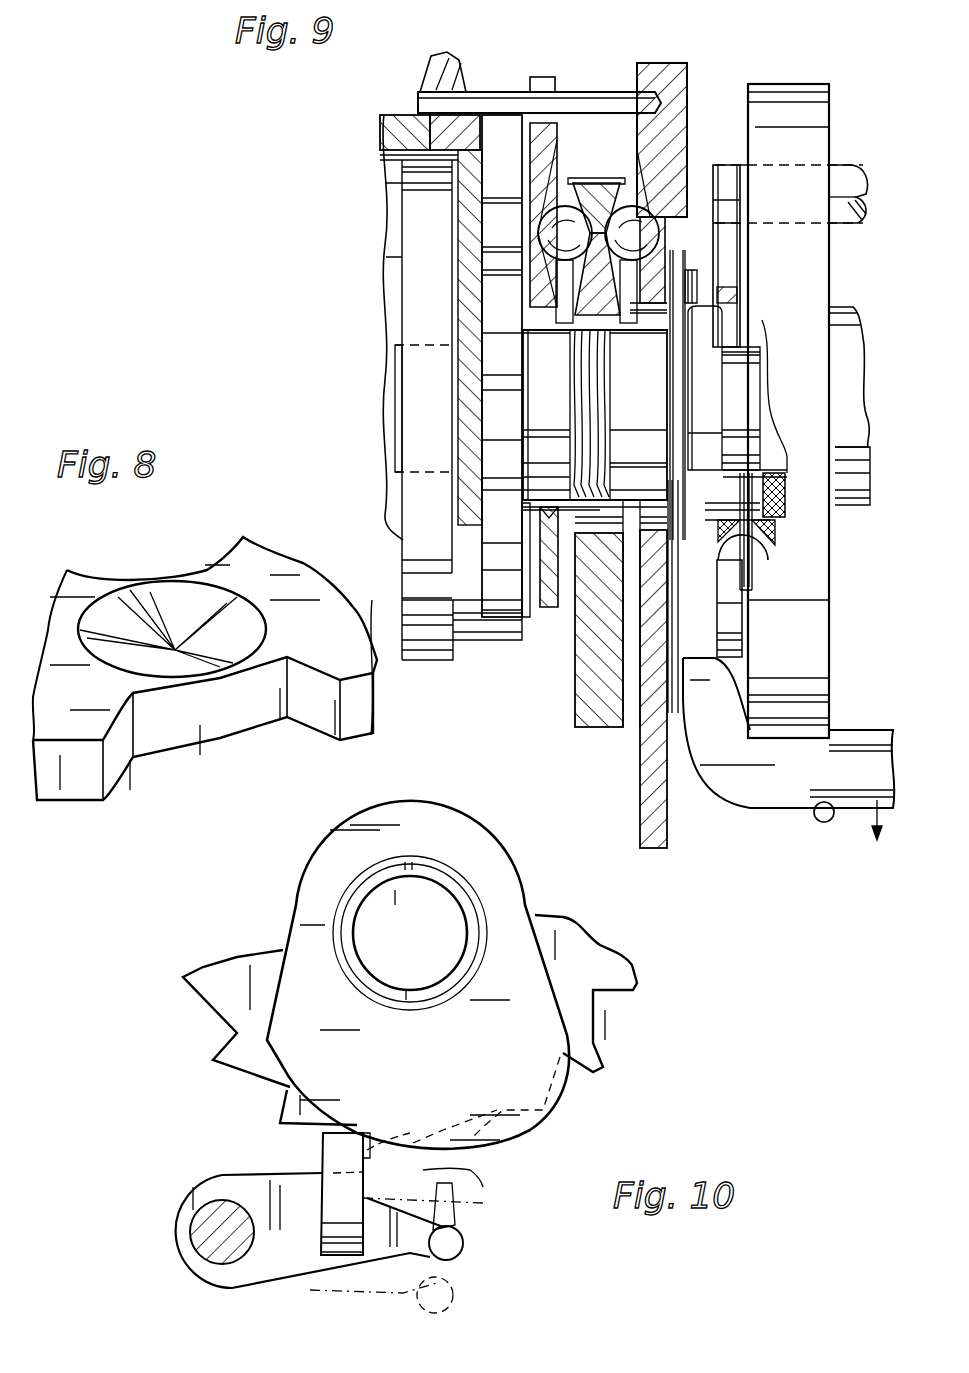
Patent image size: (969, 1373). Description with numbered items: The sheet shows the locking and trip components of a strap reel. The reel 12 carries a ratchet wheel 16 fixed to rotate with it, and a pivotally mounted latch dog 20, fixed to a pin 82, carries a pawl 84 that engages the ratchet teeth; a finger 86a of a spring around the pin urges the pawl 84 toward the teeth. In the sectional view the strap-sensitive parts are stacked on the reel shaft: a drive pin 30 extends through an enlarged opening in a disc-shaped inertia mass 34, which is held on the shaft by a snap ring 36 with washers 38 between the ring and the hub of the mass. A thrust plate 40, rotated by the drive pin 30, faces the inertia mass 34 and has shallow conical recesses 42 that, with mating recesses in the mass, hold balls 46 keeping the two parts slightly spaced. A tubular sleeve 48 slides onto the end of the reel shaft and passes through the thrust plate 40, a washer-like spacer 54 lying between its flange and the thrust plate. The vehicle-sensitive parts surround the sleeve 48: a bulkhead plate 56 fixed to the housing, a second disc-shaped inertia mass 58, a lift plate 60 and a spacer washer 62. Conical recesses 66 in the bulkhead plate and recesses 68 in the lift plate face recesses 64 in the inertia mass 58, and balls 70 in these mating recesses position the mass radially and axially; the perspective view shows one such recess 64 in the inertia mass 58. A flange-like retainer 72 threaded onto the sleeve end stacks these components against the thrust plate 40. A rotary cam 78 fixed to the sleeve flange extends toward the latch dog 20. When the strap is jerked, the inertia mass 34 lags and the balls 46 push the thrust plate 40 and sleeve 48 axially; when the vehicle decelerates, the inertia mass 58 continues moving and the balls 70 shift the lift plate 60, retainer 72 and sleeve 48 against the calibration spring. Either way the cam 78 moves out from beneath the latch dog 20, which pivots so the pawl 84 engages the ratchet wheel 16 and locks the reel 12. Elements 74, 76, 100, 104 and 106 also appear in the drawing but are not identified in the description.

In FIG. 9, the reel 12 is at (854, 325).
In FIG. 10, the ratchet wheel 16 is at (630, 978).
In FIG. 9, the latch dog 20 is at (704, 667).
In FIG. 10, the latch dog 20 is at (337, 1140).
In FIG. 9, the drive pin 30 is at (846, 176).
In FIG. 9, the inertia mass 34 is at (808, 99).
In FIG. 9, the snap ring 36 is at (770, 520).
In FIG. 9, the washers 38 is at (780, 472).
In FIG. 9, the thrust plate 40 is at (735, 616).
In FIG. 9, the recesses 42 is at (752, 540).
In FIG. 9, the ball 46 is at (747, 556).
In FIG. 9, the sleeve 48 is at (667, 433).
In FIG. 10, the sleeve 48 is at (440, 872).
In FIG. 9, the spacer 54 is at (697, 298).
In FIG. 9, the bulkhead plate 56 is at (660, 80).
In FIG. 8, the inertia mass 58 is at (276, 566).
In FIG. 9, the lift plate 60 is at (549, 613).
In FIG. 9, the spacer washer 62 is at (528, 556).
In FIG. 9, the recesses 64 is at (570, 196).
In FIG. 8, the recesses 64 is at (176, 598).
In FIG. 9, the recesses 66 is at (632, 323).
In FIG. 9, the recesses 68 is at (532, 185).
In FIG. 9, the balls 70 is at (557, 248).
In FIG. 9, the retainer 72 is at (492, 236).
In FIG. 9, the cover plate 74 is at (501, 100).
In FIG. 9, the key tab 76 is at (546, 80).
In FIG. 9, the rotary cam 78 is at (667, 718).
In FIG. 10, the rotary cam 78 is at (446, 1064).
In FIG. 10, the pin 82 is at (203, 1248).
In FIG. 10, the pawl 84 is at (452, 1200).
In FIG. 9, the finger 86a is at (823, 822).
In FIG. 9, the housing 100 is at (413, 314).
In FIG. 9, the housing wall 104 is at (453, 194).
In FIG. 9, the bottom flange 106 is at (473, 630).